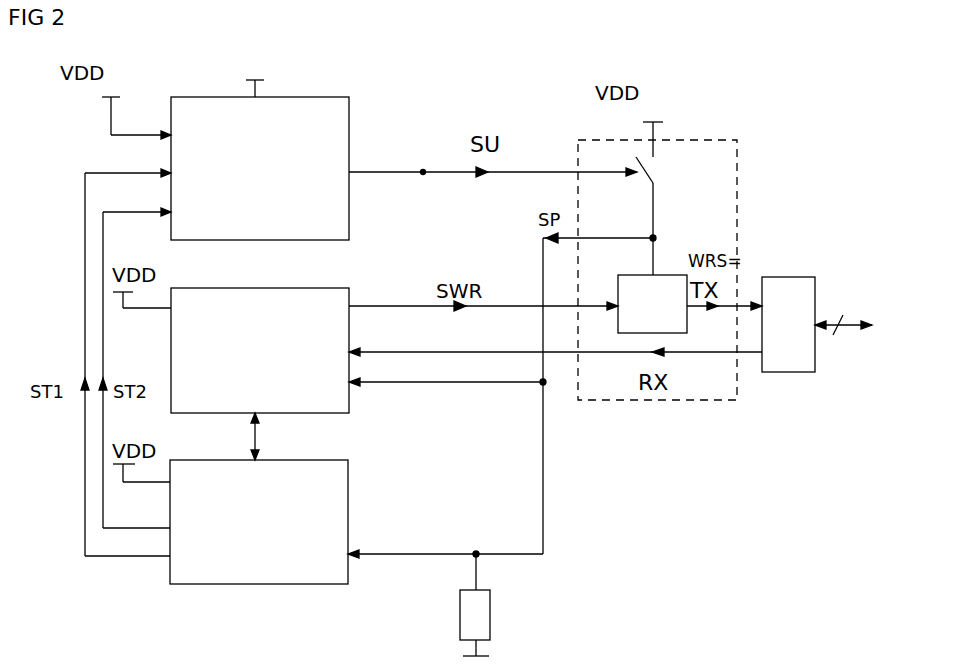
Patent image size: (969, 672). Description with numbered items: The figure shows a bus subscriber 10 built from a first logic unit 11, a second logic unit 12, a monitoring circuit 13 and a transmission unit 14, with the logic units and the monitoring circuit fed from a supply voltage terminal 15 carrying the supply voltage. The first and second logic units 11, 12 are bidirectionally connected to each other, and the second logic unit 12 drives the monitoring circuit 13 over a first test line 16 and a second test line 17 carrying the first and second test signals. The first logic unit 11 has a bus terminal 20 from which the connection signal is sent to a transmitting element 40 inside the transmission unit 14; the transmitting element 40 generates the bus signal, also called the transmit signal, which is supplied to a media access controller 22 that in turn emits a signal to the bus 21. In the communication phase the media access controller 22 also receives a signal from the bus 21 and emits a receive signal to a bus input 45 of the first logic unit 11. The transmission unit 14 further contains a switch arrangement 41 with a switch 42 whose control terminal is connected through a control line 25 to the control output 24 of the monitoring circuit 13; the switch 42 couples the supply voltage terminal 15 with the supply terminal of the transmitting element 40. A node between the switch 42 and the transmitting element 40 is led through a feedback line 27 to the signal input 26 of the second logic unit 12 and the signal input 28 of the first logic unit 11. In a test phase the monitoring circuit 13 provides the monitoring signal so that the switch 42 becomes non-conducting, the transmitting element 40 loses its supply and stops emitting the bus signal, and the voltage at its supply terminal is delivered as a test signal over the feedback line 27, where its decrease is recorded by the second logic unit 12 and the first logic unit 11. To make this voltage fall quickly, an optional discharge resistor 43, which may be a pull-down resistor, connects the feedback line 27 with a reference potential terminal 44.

The bus subscriber 10 is at (740, 55).
The first logic unit 11 is at (228, 284).
The second logic unit 12 is at (222, 462).
The monitoring circuit 13 is at (353, 98).
The transmission unit 14 is at (682, 145).
The supply voltage terminal 15 is at (105, 100).
The first test line 16 is at (136, 558).
The second test line 17 is at (136, 528).
The bus terminal 20 is at (353, 312).
The bus 21 is at (858, 330).
The media access controller 22 is at (790, 274).
The control output 24 is at (352, 170).
The control line 25 is at (403, 176).
The signal input 26 is at (352, 566).
The feedback line 27 is at (542, 270).
The signal input 28 is at (352, 396).
The transmitting element 40 is at (622, 272).
The switch arrangement 41 is at (700, 185).
The switch 42 is at (655, 178).
The discharge resistor 43 is at (490, 612).
The reference potential terminal 44 is at (478, 654).
The bus input 45 is at (362, 362).